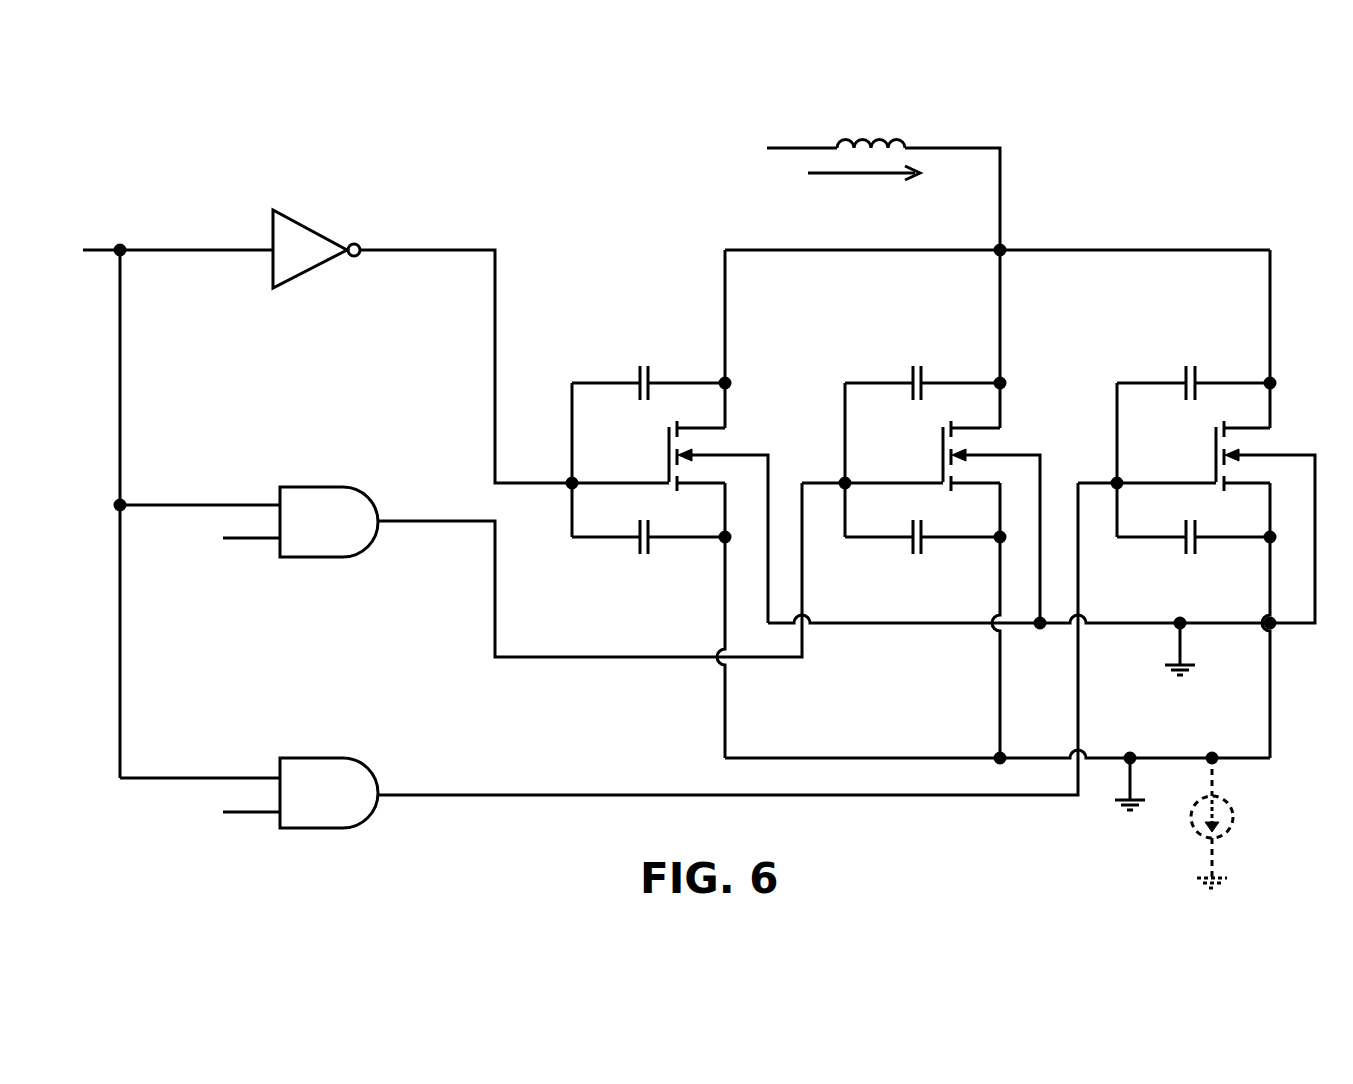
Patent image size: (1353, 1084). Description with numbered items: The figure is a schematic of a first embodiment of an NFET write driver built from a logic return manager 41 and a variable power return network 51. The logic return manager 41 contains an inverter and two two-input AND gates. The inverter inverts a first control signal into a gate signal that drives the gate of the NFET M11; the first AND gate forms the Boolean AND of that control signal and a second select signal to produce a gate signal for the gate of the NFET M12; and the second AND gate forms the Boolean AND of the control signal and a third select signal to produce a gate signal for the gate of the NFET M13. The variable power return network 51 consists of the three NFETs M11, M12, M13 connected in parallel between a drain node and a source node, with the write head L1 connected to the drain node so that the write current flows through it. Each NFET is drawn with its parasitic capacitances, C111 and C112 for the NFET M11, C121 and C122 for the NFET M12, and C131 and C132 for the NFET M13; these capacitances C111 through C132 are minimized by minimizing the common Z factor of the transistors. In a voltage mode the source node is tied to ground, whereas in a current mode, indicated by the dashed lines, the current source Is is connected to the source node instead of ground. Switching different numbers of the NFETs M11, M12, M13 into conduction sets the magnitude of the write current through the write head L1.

The logic return manager 41 is at (453, 163).
The variable power return network 51 is at (1118, 163).
The write head L1 is at (883, 180).
The NFET M11 is at (693, 522).
The NFET M12 is at (966, 522).
The NFET M13 is at (1240, 522).
The capacitance C111 is at (648, 370).
The capacitance C112 is at (648, 551).
The capacitance C121 is at (922, 370).
The capacitance C122 is at (922, 551).
The capacitance C131 is at (1193, 370).
The capacitance C132 is at (1193, 551).
The current source Is is at (1223, 823).